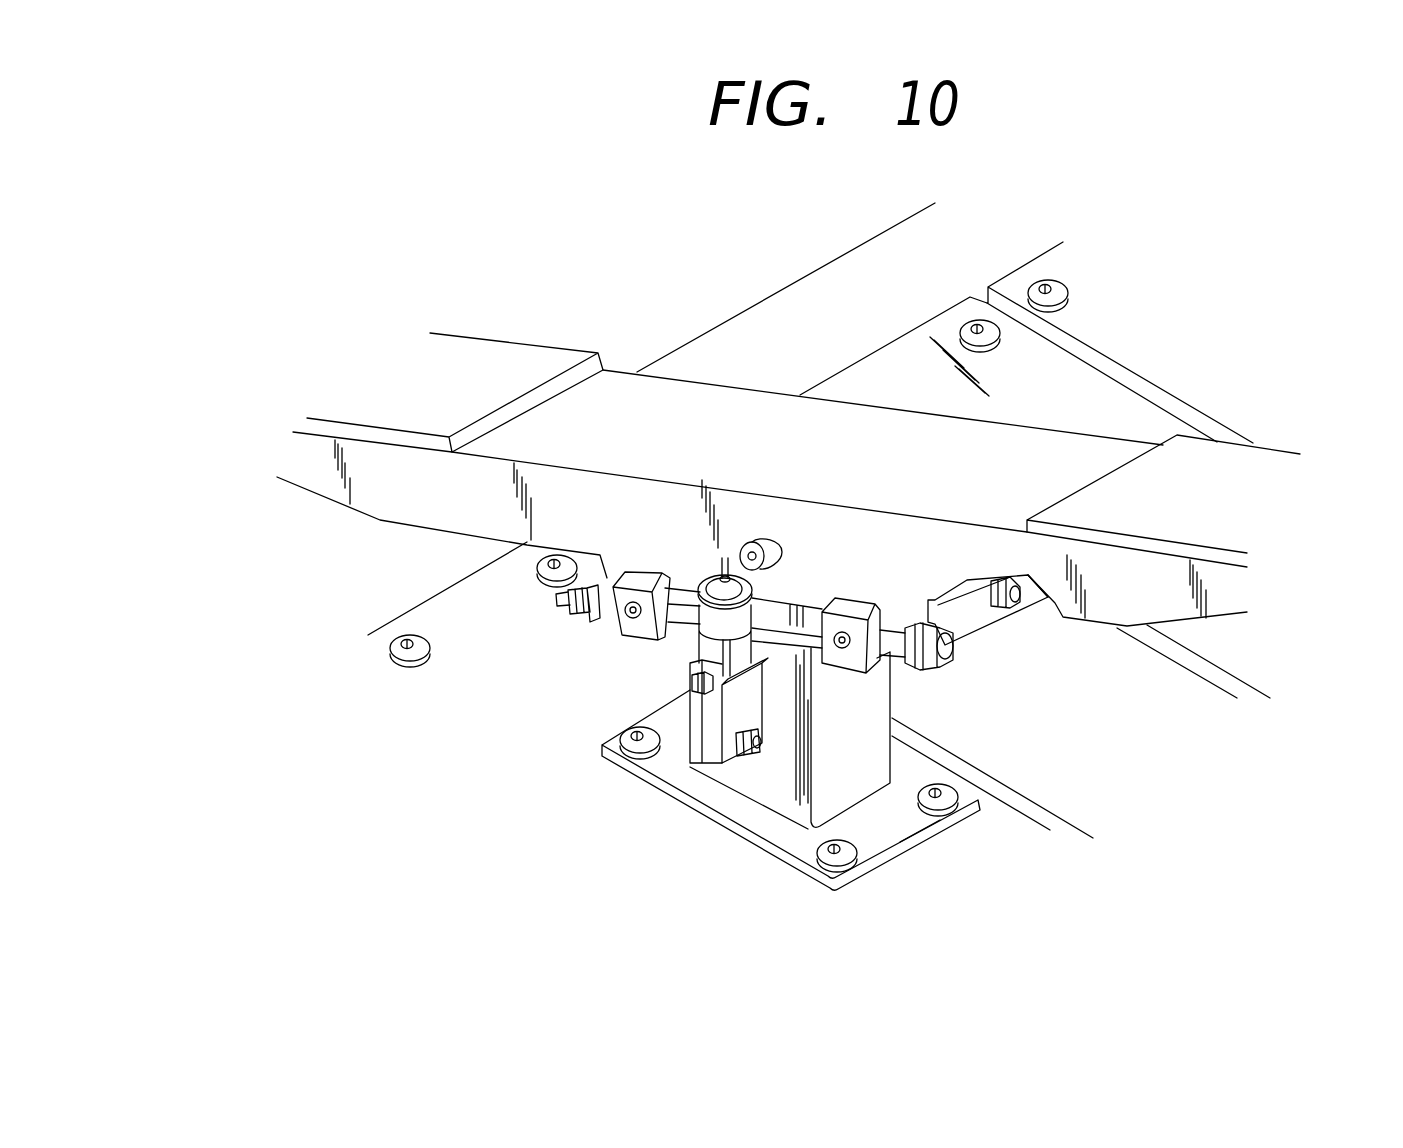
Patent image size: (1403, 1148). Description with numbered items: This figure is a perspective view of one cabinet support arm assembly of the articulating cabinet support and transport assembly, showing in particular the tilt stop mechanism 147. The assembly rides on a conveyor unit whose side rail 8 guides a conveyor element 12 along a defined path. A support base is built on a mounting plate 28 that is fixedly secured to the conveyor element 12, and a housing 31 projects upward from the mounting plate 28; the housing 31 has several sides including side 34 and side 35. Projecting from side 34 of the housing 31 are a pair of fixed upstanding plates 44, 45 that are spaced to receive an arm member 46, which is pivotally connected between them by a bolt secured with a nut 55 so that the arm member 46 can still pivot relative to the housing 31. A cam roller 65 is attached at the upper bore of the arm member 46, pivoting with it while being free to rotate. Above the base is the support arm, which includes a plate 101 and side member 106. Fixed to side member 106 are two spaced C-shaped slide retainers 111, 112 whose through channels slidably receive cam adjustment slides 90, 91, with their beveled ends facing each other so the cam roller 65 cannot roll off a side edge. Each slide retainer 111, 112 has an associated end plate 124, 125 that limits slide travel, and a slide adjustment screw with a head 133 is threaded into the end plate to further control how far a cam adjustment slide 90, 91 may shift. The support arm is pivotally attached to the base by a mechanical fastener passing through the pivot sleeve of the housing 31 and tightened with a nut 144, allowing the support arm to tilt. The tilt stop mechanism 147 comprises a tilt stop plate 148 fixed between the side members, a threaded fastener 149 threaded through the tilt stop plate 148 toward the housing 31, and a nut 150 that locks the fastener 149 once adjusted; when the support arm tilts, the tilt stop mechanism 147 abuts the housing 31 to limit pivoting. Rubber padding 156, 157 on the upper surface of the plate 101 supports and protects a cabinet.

The side rail 8 is at (813, 303).
The conveyor element 12 is at (922, 352).
The mounting plate 28 is at (898, 833).
The housing 31 is at (774, 822).
The side 34 is at (753, 787).
The side 35 is at (877, 840).
The upstanding plate 44 is at (692, 740).
The upstanding plate 45 is at (740, 713).
The arm member 46 is at (690, 686).
The nut 55 is at (753, 740).
The cam roller 65 is at (690, 655).
The cam adjustment slide 90 is at (698, 592).
The cam adjustment slide 91 is at (788, 598).
The plate 101 is at (640, 392).
The side member 106 is at (650, 500).
The slide retainer 111 is at (637, 577).
The slide retainer 112 is at (853, 598).
The end plate 124 is at (592, 620).
The end plate 125 is at (917, 667).
The head 133 is at (570, 597).
The nut 144 is at (763, 535).
The tilt stop mechanism 147 is at (1023, 643).
The tilt stop plate 148 is at (970, 622).
The threaded fastener 149 is at (1007, 576).
The nut 150 is at (982, 580).
The padding 156 is at (430, 348).
The padding 157 is at (1230, 462).